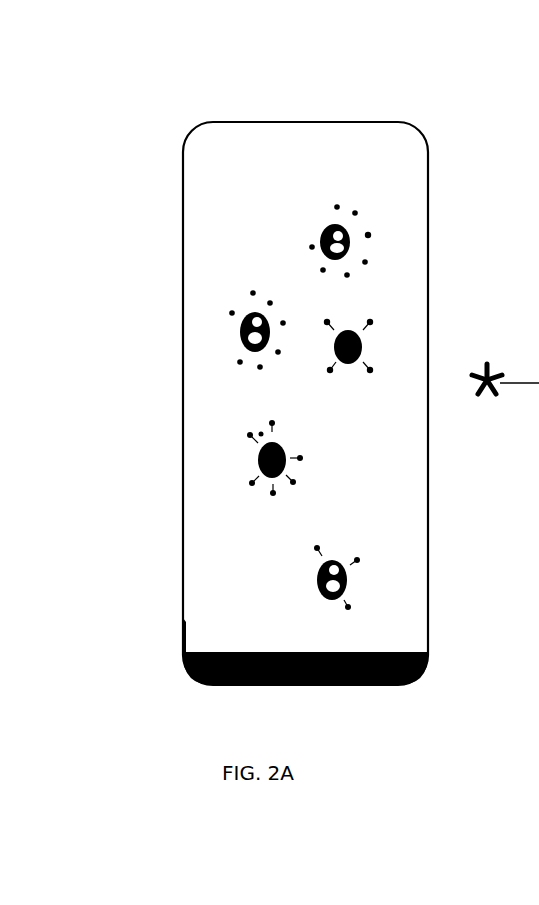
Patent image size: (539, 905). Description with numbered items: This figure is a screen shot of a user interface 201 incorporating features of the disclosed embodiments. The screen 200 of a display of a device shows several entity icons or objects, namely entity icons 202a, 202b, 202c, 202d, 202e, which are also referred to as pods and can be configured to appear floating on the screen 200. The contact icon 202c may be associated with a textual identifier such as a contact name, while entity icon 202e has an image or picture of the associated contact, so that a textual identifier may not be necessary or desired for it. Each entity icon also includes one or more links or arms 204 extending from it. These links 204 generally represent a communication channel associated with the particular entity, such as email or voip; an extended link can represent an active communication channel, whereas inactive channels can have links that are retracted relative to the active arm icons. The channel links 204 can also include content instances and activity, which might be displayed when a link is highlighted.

The screen 200 is at (432, 152).
The user interface 201 is at (184, 100).
The entity icon 202a is at (348, 578).
The entity icon 202b is at (283, 452).
The contact icon 202c is at (257, 310).
The entity icon 202d is at (340, 249).
The entity icon 202e is at (360, 345).
The link 204 is at (365, 228).